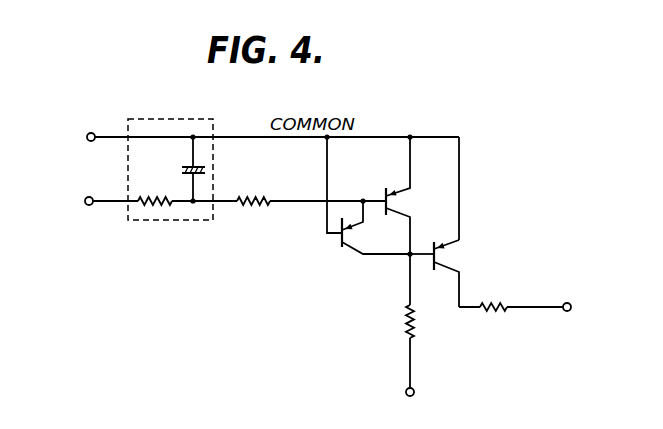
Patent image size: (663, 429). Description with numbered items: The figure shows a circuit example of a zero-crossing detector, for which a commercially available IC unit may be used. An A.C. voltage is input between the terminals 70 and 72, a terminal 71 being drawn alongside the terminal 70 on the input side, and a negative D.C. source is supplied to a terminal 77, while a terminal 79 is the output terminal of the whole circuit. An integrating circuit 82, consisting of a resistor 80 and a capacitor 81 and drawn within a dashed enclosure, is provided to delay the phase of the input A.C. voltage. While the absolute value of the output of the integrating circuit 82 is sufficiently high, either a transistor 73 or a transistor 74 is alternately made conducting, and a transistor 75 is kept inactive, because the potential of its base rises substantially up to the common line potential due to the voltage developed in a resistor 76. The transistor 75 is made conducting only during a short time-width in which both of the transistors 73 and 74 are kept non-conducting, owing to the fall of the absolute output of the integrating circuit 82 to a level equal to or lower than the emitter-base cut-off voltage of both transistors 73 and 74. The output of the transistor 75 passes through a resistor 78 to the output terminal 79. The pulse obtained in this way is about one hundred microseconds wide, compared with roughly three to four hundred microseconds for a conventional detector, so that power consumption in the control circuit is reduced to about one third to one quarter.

The terminal 70 is at (88, 133).
The input terminal 71 is at (84, 202).
The terminal 72 is at (245, 210).
The transistor 73 is at (340, 245).
The transistor 74 is at (380, 193).
The transistor 75 is at (450, 248).
The resistor 76 is at (407, 314).
The terminal 77 is at (407, 388).
The resistor 78 is at (497, 312).
The output terminal 79 is at (563, 305).
The resistor 80 is at (156, 196).
The capacitor 81 is at (200, 165).
The integrating circuit 82 is at (166, 221).